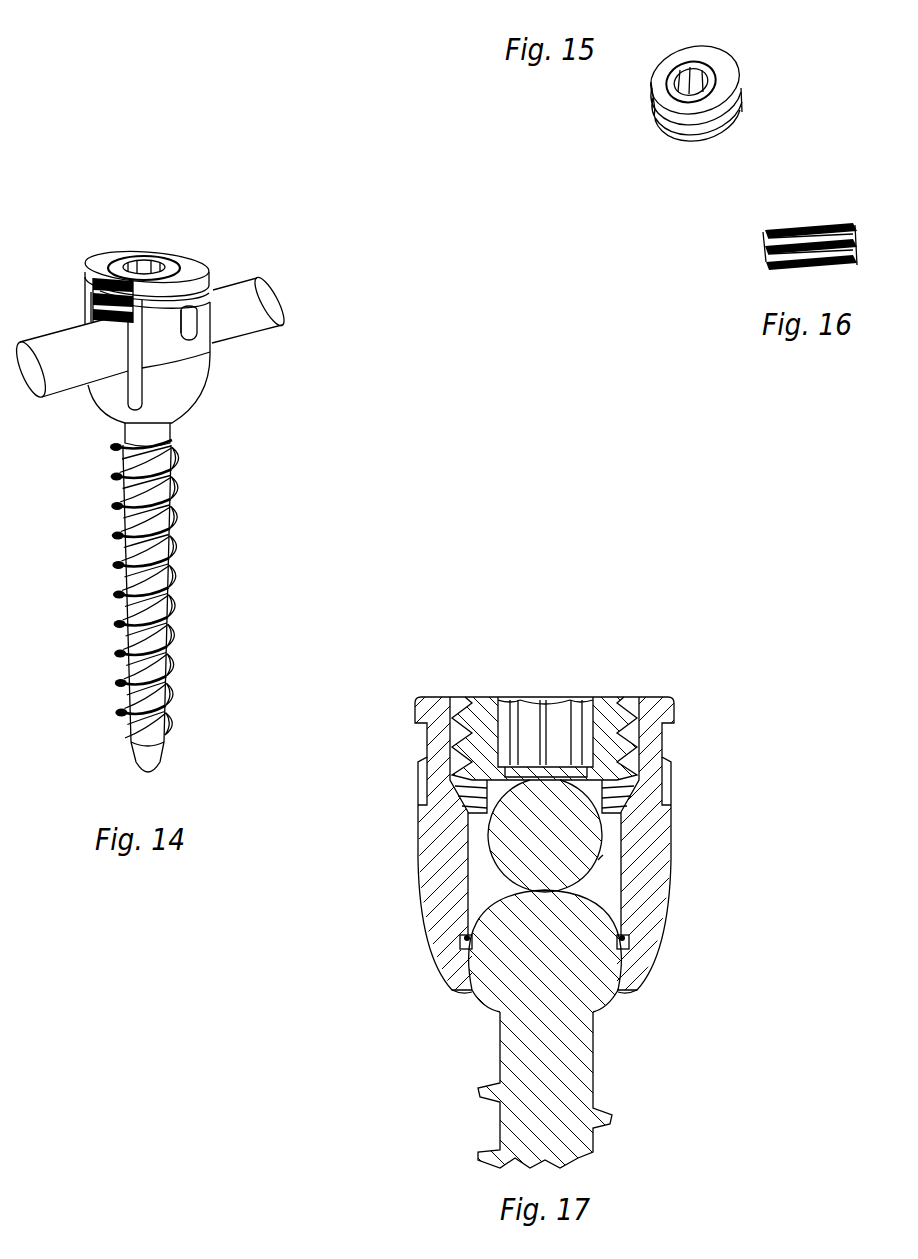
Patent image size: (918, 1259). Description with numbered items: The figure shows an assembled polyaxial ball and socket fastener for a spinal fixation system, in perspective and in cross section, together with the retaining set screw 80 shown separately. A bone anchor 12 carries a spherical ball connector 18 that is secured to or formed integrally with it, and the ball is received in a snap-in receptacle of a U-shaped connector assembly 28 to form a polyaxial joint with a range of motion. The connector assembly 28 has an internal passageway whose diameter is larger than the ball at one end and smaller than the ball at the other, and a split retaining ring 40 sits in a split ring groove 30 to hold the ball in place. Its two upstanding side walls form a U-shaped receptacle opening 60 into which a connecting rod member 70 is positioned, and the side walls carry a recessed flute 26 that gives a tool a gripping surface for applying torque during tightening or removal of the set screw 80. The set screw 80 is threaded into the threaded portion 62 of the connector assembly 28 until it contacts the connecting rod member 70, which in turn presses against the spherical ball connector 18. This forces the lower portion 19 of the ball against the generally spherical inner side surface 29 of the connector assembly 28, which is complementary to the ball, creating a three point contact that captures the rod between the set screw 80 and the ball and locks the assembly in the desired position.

In FIG. 14, the bone anchor 12 is at (195, 577).
In FIG. 17, the bone anchor 12 is at (618, 1100).
In FIG. 17, the spherical ball connector 18 is at (600, 990).
In FIG. 17, the lower portion of the spherical ball connector 19 is at (470, 995).
In FIG. 14, the recessed flute 26 is at (190, 318).
In FIG. 17, the recessed flute 26 is at (667, 795).
In FIG. 17, the U-shaped connector assembly 28 is at (423, 917).
In FIG. 17, the inner side surface 29 is at (467, 990).
In FIG. 17, the split ring groove 30 is at (628, 948).
In FIG. 17, the split retaining ring 40 is at (627, 935).
In FIG. 17, the U-shaped receptacle opening 60 is at (603, 862).
In FIG. 17, the threaded portion 62 is at (637, 730).
In FIG. 14, the connecting rod member 70 is at (267, 300).
In FIG. 17, the connecting rod member 70 is at (585, 835).
In FIG. 14, the set screw 80 is at (167, 257).
In FIG. 15, the set screw 80 is at (728, 57).
In FIG. 16, the set screw 80 is at (765, 230).
In FIG. 17, the set screw 80 is at (600, 695).